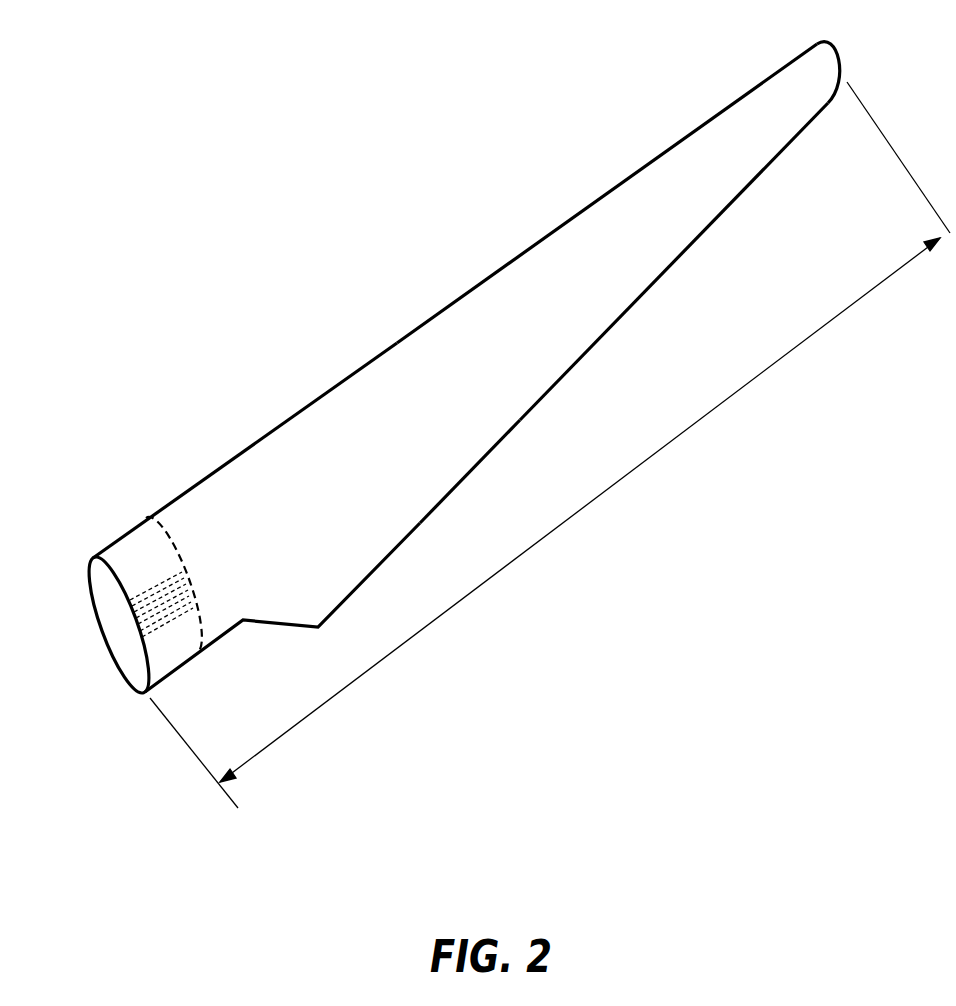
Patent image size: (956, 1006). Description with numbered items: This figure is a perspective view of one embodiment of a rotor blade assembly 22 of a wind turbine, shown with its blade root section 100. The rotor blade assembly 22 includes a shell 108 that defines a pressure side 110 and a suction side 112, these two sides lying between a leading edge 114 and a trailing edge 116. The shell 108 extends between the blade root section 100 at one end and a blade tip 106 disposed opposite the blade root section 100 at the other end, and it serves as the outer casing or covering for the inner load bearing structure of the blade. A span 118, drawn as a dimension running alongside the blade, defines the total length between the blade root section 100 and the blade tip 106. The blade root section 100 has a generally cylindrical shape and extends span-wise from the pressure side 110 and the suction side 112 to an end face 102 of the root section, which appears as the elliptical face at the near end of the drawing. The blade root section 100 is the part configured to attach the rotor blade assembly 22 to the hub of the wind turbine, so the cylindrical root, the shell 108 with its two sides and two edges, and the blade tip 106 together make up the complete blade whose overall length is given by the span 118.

The rotor blade assembly 22 is at (411, 174).
The blade root section 100 is at (155, 570).
The end face 102 is at (116, 660).
The blade tip 106 is at (838, 53).
The shell 108 is at (312, 578).
The pressure side 110 is at (413, 472).
The suction side 112 is at (330, 418).
The leading edge 114 is at (400, 338).
The trailing edge 116 is at (493, 450).
The span 118 is at (538, 555).